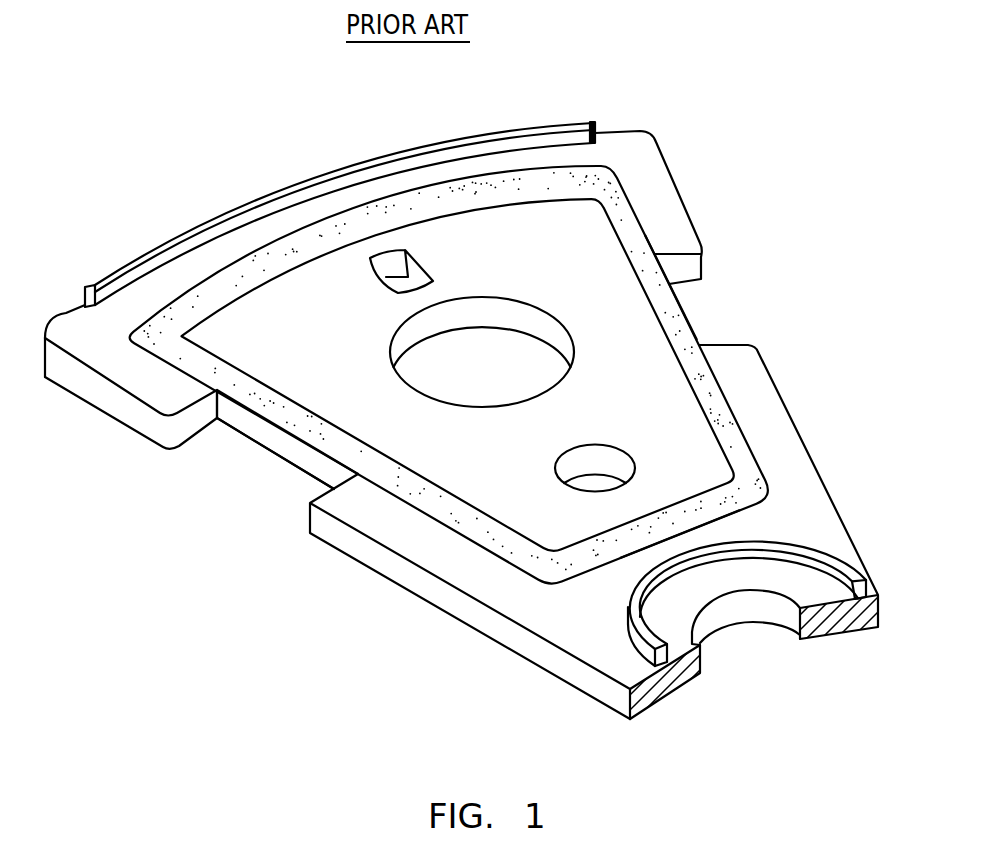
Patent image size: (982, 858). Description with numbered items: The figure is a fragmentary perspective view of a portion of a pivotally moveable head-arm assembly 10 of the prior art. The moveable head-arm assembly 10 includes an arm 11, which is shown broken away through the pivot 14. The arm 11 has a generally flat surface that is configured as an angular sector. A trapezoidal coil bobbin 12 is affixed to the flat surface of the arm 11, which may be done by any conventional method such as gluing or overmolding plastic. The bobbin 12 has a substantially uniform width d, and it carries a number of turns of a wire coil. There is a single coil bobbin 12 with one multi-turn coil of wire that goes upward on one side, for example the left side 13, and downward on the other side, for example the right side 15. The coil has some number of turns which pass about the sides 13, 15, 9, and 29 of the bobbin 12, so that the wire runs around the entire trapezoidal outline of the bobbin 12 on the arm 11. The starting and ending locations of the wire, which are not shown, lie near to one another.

The side 9 is at (266, 295).
The moveable head-arm assembly 10 is at (314, 166).
The arm 11 is at (209, 223).
The coil bobbin 12 is at (293, 452).
The left side 13 is at (242, 452).
The pivot 14 is at (797, 585).
The right side 15 is at (690, 294).
The side 29 is at (685, 482).
The width d is at (608, 337).